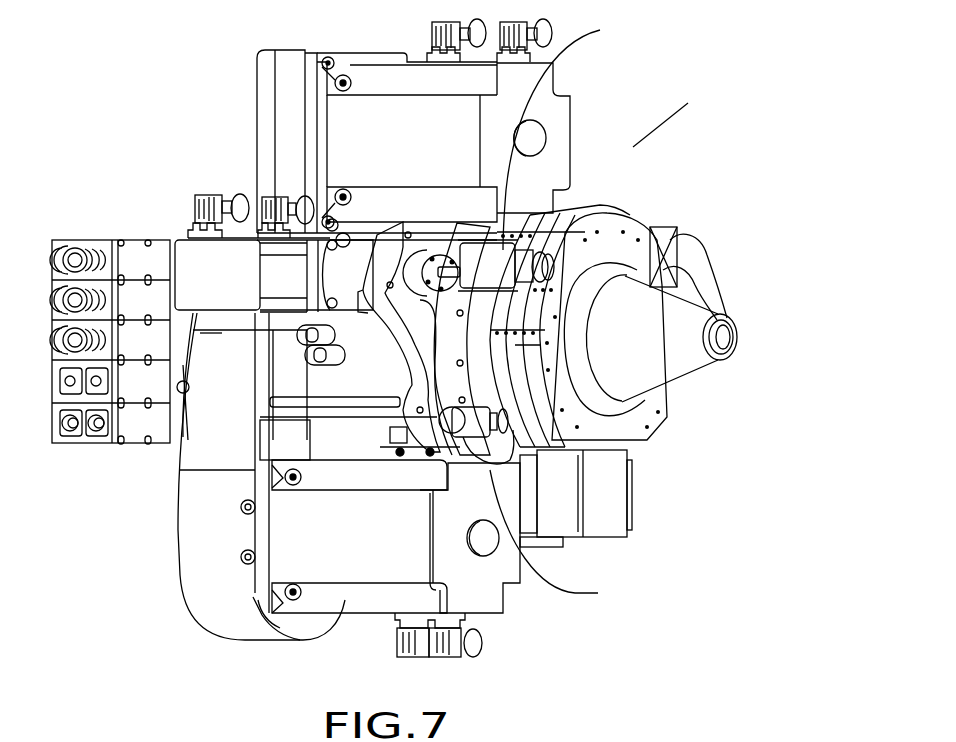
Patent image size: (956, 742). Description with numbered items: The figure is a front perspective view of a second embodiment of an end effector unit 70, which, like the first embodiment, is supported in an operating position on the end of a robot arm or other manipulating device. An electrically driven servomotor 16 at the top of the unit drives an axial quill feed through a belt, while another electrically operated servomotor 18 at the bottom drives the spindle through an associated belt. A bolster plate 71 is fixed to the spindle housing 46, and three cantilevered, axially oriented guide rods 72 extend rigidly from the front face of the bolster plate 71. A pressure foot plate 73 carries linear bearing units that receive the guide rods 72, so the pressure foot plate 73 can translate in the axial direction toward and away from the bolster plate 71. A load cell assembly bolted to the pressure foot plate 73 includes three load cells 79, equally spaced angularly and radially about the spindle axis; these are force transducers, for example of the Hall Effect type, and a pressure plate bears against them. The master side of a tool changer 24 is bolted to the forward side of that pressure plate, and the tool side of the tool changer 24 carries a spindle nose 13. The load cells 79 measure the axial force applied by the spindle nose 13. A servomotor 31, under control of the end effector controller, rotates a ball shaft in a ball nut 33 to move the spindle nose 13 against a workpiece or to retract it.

The spindle nose 13 is at (680, 367).
The servomotor 16 is at (555, 110).
The servomotor 18 is at (490, 600).
The tool changer 24 is at (618, 208).
The servomotor 31 is at (210, 273).
The ball nut 33 is at (443, 253).
The spindle housing 46 is at (373, 360).
The end effector unit 70 is at (630, 150).
The bolster plate 71 is at (405, 398).
The guide rods 72 is at (430, 430).
The pressure foot plate 73 is at (375, 425).
The load cells 79 is at (562, 312).